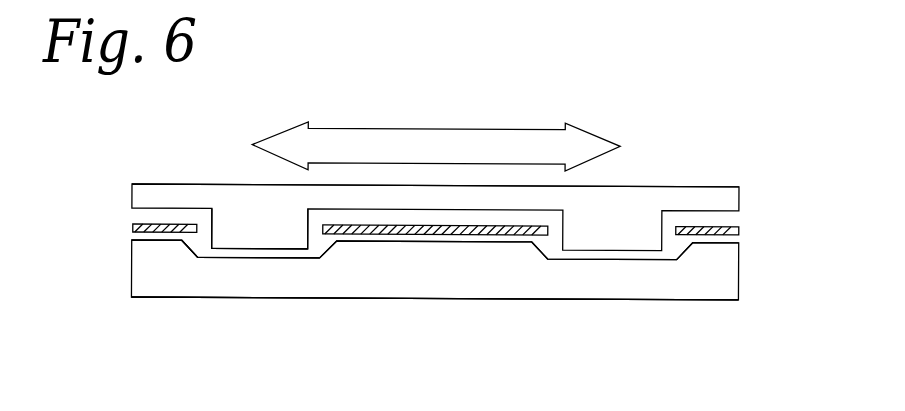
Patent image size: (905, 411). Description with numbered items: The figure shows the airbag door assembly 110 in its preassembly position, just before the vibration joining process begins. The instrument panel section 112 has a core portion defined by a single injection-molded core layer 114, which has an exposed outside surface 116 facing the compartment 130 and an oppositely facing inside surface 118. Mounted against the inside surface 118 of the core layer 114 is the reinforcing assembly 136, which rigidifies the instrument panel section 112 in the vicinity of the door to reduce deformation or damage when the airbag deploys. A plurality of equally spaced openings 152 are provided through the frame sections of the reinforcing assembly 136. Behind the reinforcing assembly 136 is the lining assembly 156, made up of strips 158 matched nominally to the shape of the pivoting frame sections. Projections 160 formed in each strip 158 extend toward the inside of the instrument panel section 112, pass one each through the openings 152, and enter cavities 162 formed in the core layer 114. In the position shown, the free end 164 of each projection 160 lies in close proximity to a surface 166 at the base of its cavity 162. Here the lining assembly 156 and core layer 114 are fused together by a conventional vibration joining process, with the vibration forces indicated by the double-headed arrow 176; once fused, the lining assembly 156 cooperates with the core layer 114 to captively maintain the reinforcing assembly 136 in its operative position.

The airbag door assembly 110 is at (438, 213).
The instrument panel section 112 is at (438, 297).
The core layer 114 is at (425, 278).
The outside surface 116 is at (558, 297).
The inside surface 118 is at (165, 235).
The compartment 130 is at (375, 397).
The reinforcing assembly 136 is at (744, 231).
The openings 152 is at (217, 222).
The lining assembly 156 is at (436, 157).
The strips 158 is at (676, 186).
The projections 160 is at (260, 232).
The cavities 162 is at (197, 241).
The free end 164 is at (259, 249).
The surface 166 is at (283, 238).
The double-headed arrow 176 is at (482, 140).